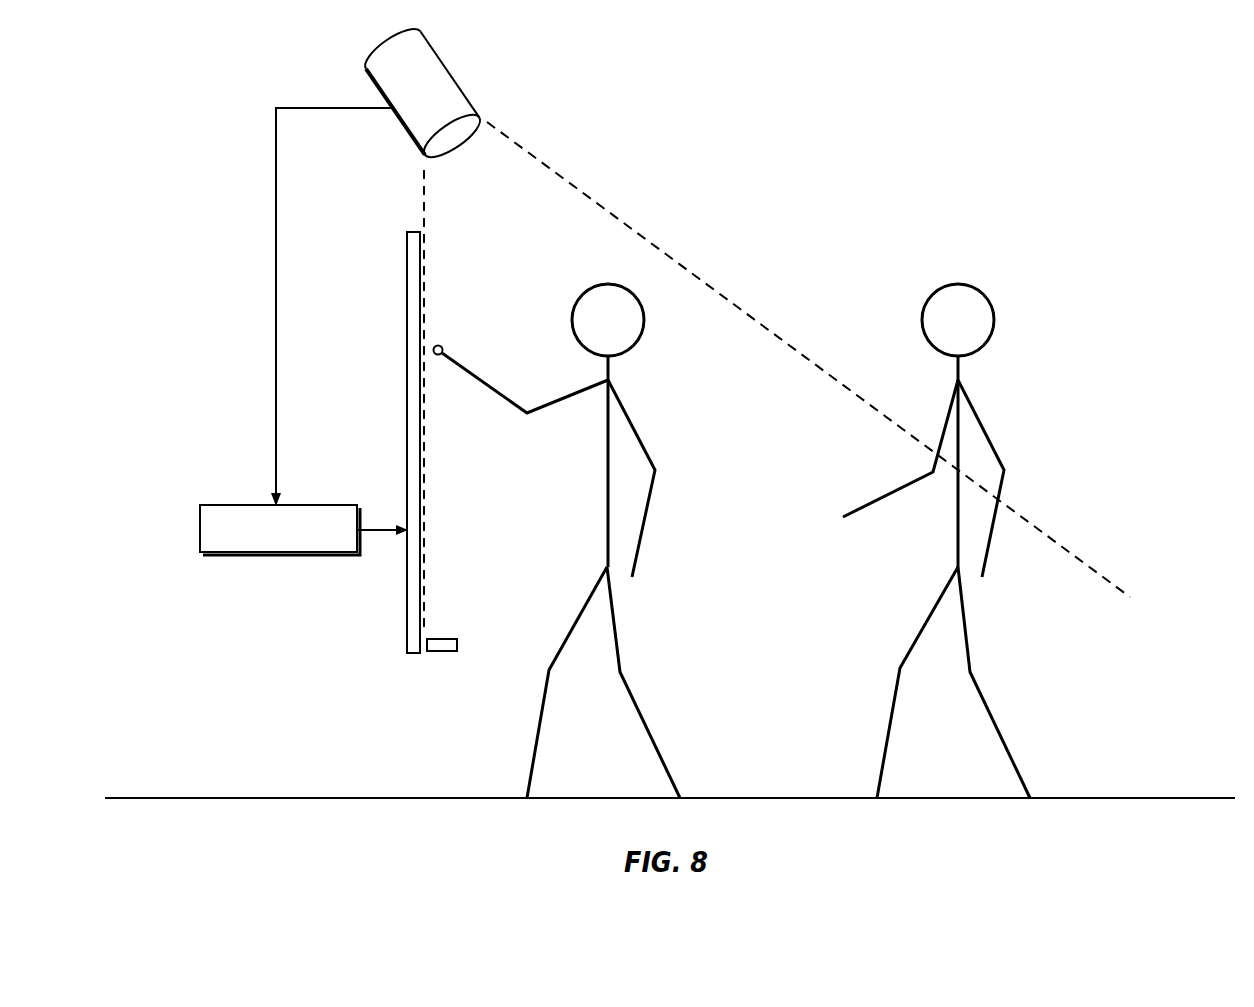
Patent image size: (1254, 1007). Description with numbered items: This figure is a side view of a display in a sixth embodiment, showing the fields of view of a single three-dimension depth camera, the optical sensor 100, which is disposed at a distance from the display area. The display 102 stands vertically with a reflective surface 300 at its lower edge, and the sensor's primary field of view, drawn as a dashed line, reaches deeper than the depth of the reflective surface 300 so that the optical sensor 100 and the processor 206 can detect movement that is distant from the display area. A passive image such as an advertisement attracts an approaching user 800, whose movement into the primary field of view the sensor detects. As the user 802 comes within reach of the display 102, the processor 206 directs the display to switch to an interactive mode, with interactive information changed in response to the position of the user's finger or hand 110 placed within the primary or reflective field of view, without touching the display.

The optical sensor 100 is at (451, 72).
The display 102 is at (413, 292).
The touch point 110 is at (440, 345).
The processor 206 is at (312, 505).
The reflective surface 300 is at (437, 651).
The approaching user 800 is at (985, 422).
The user within reach of the display 802 is at (626, 408).